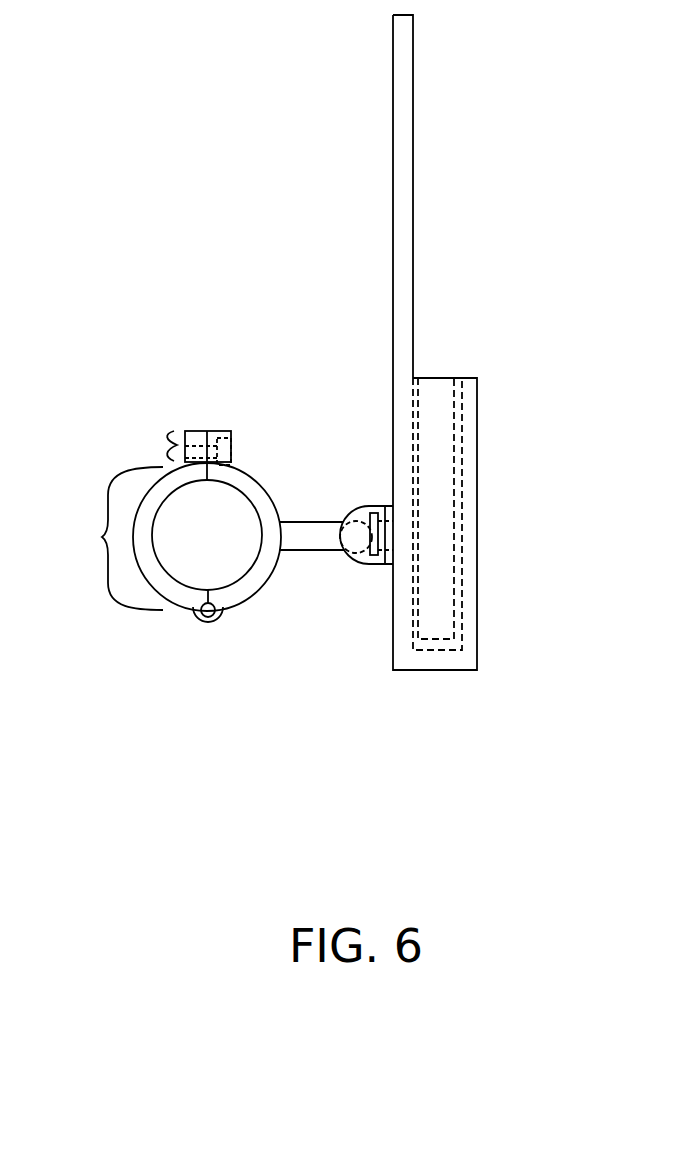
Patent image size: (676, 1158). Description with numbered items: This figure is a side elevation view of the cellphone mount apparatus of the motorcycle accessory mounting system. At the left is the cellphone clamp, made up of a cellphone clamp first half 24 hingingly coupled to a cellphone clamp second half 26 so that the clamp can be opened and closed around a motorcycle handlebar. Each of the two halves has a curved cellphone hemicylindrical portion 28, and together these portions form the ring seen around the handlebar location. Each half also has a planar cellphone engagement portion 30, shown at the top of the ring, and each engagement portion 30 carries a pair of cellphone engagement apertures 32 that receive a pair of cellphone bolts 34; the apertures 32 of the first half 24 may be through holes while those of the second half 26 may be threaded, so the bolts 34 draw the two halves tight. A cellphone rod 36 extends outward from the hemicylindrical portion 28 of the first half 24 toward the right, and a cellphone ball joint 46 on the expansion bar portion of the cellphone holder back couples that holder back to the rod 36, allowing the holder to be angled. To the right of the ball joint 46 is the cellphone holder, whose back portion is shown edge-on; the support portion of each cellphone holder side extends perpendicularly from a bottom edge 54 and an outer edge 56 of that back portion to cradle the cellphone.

The cellphone clamp first half 24 is at (267, 500).
The cellphone clamp second half 26 is at (187, 600).
The cellphone hemicylindrical portion 28 is at (108, 538).
The planar cellphone engagement portion 30 is at (163, 450).
The cellphone engagement apertures 32 is at (199, 447).
The cellphone bolts 34 is at (229, 448).
The cellphone rod 36 is at (302, 542).
The cellphone ball joint 46 is at (355, 560).
The bottom edge 54 is at (412, 669).
The outer edge 56 is at (413, 187).